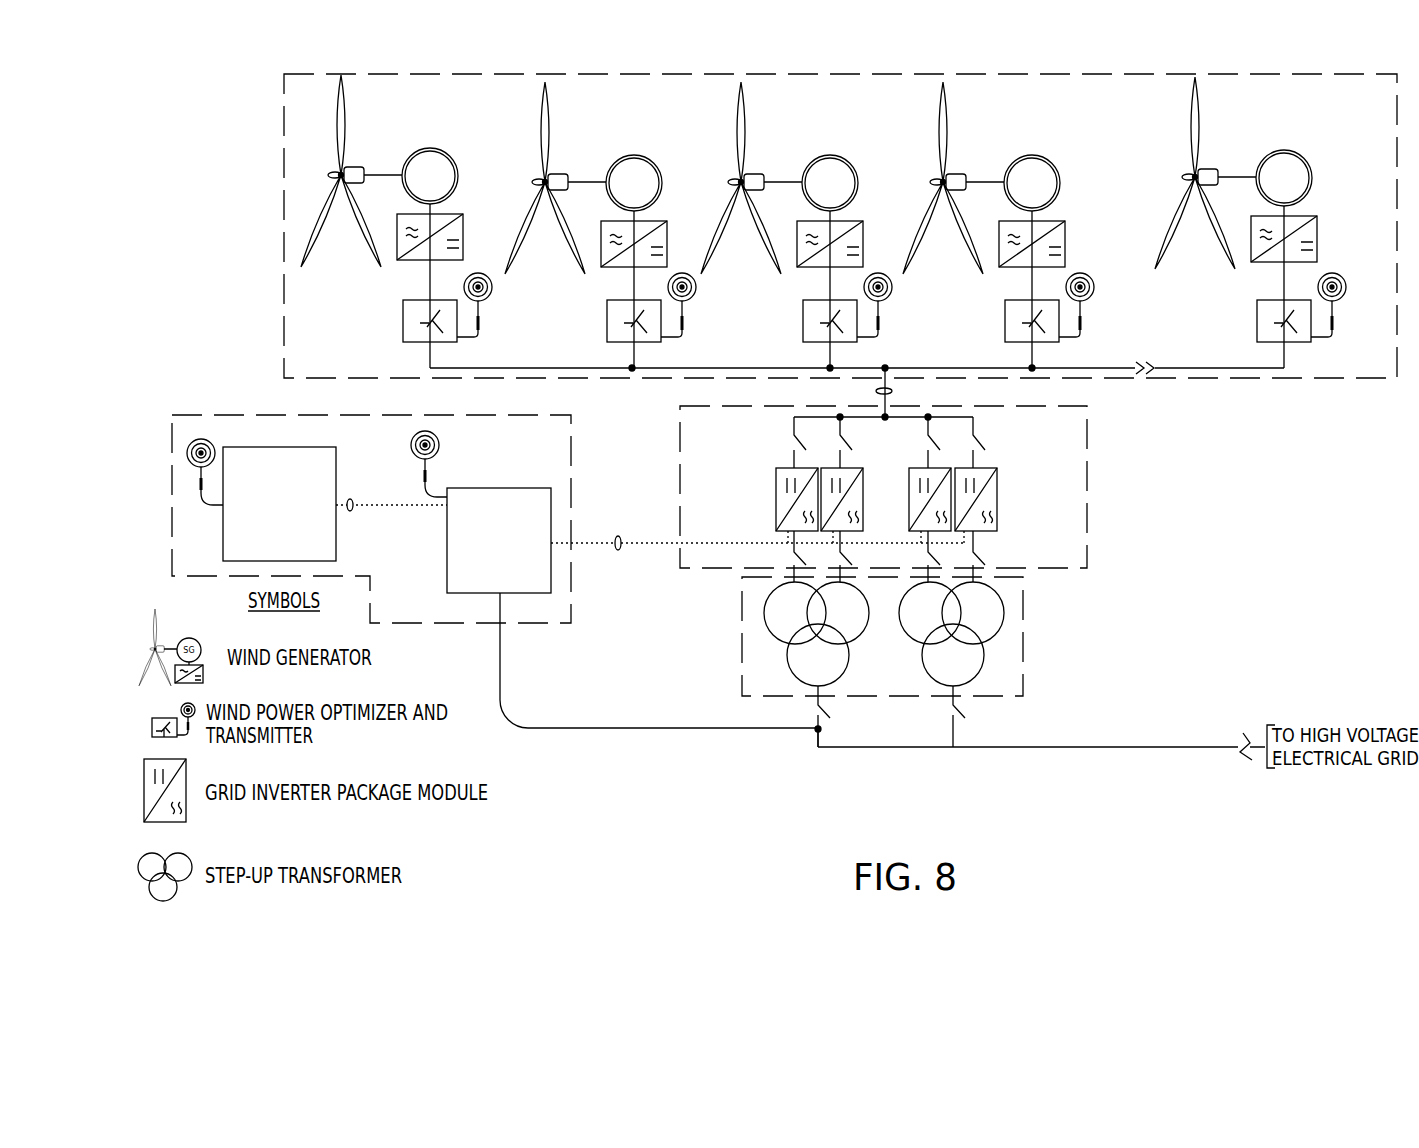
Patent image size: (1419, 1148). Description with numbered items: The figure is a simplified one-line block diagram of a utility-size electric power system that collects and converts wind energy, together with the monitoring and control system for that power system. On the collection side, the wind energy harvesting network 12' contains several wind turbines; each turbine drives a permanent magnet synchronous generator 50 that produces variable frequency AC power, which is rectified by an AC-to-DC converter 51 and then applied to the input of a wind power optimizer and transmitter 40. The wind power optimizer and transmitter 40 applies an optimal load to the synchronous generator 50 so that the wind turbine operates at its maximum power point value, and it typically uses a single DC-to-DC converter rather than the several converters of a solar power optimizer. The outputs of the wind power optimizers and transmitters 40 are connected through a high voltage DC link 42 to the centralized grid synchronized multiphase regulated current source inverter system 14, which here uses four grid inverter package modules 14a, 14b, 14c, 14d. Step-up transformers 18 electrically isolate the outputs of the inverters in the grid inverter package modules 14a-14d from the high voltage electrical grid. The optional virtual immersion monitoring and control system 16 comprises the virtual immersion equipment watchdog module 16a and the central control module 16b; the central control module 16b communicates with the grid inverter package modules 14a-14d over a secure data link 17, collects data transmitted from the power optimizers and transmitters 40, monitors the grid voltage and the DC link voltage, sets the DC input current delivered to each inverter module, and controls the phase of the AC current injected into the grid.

The wind energy collection network 12' is at (806, 226).
The permanent magnet synchronous generator 50 is at (451, 157).
The AC-to-DC converter 51 is at (463, 227).
The wind power optimizer and transmitter 40 is at (403, 334).
The high voltage DC link 42 is at (892, 391).
The centralized grid synchronized multiphase regulated current source inverter syste 14 is at (906, 494).
The grid inverter package module 14a is at (782, 478).
The grid inverter package module 14b is at (862, 485).
The grid inverter package module 14c is at (916, 506).
The grid inverter package module 14d is at (992, 487).
The step-up transformer 18 is at (1008, 652).
The virtual immersion monitoring and control system 16 is at (401, 519).
The virtual immersion equipment watchdog module 16a is at (327, 460).
The central control module 16b is at (447, 527).
The secure data link 17 is at (618, 565).